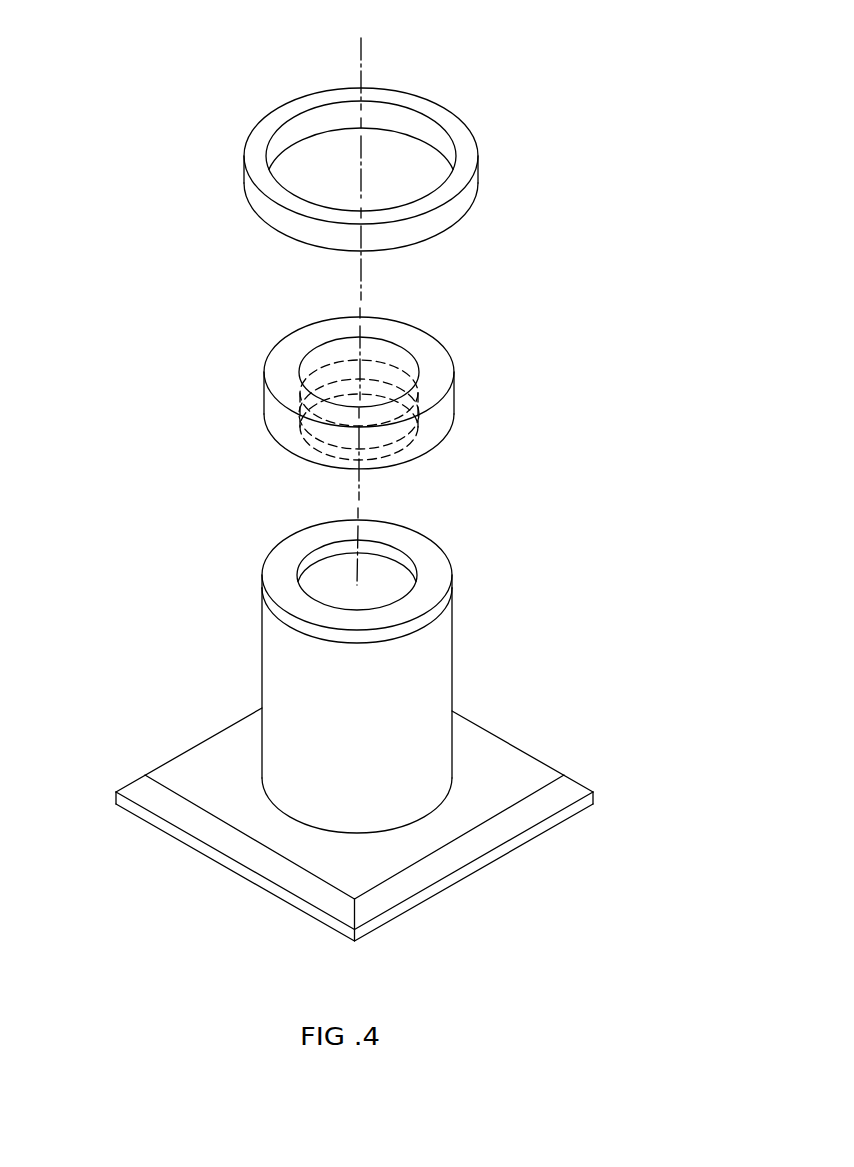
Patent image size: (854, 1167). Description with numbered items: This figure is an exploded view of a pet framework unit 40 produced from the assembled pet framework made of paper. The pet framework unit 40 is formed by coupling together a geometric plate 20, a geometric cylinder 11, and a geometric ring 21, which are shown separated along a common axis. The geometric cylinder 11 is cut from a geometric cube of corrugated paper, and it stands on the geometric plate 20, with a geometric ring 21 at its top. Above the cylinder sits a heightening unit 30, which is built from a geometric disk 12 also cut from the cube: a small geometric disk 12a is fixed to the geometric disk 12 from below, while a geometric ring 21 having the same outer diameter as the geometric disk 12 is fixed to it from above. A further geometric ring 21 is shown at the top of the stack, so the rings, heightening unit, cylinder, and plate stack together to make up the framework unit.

The pet framework unit 40 is at (165, 202).
The geometric ring 21 is at (467, 133).
The heightening unit 30 is at (453, 389).
The geometric disk 12 is at (273, 423).
The small geometric disk 12a is at (300, 457).
The geometric cylinder 11 is at (400, 703).
The geometric plate 20 is at (513, 816).